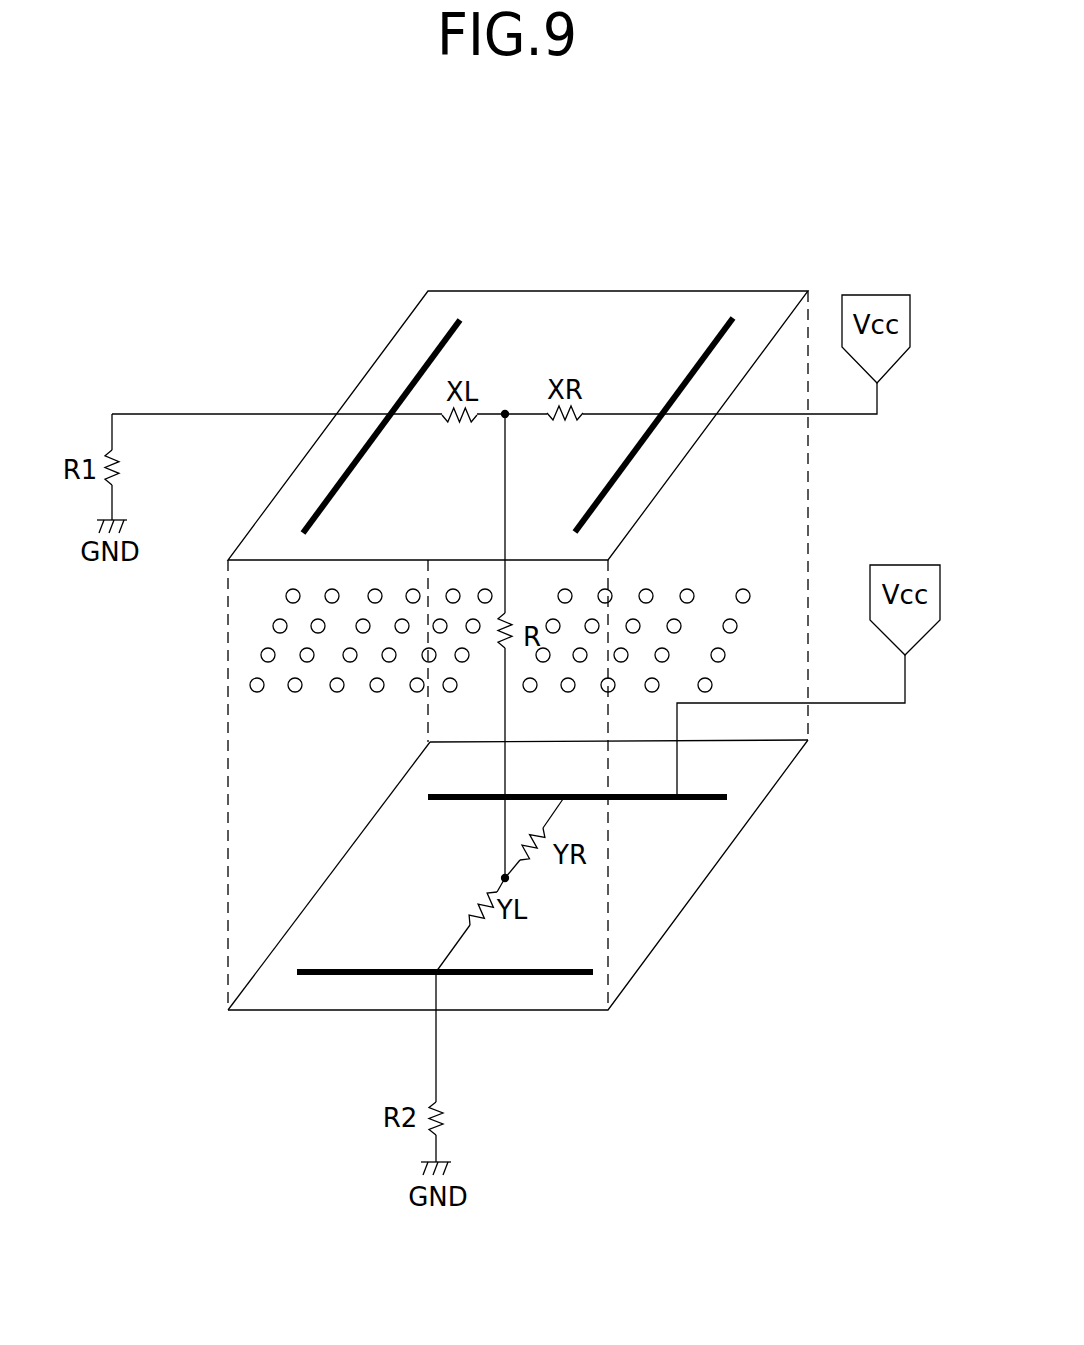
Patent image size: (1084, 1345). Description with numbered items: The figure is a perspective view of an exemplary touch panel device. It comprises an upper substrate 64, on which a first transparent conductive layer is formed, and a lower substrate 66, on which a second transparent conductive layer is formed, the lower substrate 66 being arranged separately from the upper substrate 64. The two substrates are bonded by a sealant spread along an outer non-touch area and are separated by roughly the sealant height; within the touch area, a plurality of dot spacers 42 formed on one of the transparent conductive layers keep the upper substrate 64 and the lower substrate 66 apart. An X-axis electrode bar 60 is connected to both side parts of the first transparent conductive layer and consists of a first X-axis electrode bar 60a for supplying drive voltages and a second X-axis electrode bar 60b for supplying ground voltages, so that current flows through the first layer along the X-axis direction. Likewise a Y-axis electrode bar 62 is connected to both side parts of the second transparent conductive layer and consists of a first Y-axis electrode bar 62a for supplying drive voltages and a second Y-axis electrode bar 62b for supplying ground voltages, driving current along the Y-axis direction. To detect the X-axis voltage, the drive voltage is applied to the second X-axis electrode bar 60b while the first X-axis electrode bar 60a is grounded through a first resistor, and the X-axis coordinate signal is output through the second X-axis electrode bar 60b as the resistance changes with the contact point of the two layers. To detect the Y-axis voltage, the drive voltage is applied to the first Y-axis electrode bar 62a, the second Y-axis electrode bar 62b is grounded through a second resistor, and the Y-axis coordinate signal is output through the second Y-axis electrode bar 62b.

The X-axis electrode bar 60 is at (650, 213).
The first X-axis electrode bar 60a is at (733, 318).
The second X-axis electrode bar 60b is at (460, 320).
The upper substrate 64 is at (757, 289).
The dot spacers 42 is at (745, 590).
The Y-axis electrode bar 62 is at (808, 973).
The first Y-axis electrode bar 62a is at (725, 797).
The second Y-axis electrode bar 62b is at (593, 972).
The lower substrate 66 is at (313, 1012).